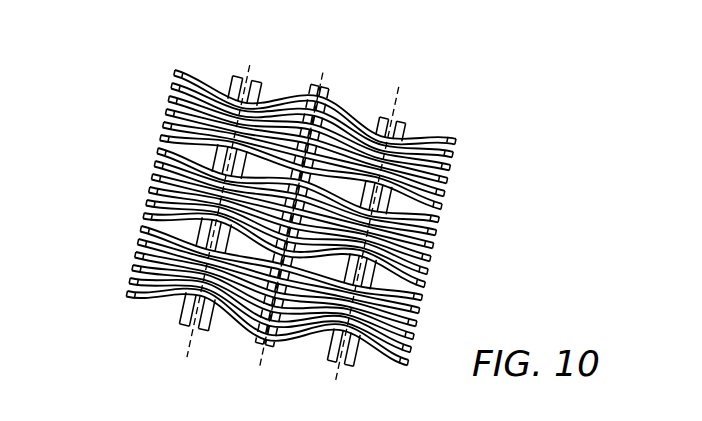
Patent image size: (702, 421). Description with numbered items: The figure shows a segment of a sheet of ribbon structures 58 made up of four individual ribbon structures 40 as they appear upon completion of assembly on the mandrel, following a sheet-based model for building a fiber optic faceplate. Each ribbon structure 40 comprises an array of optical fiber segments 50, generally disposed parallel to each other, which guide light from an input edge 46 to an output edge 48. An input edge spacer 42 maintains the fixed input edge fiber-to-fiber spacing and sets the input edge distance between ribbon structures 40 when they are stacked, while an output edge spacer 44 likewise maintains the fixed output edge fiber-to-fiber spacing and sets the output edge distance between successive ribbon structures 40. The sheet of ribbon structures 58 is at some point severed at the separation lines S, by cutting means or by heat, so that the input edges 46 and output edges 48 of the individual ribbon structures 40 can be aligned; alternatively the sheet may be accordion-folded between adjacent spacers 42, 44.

The ribbon structure 40 is at (170, 63).
The input edge spacer 42 is at (189, 318).
The output edge spacer 44 is at (127, 302).
The input edge 46 is at (398, 101).
The output edge 48 is at (452, 134).
The optical fiber segments 50 is at (154, 186).
The sheet of ribbon structures 58 is at (474, 206).
The separation lines S is at (287, 226).